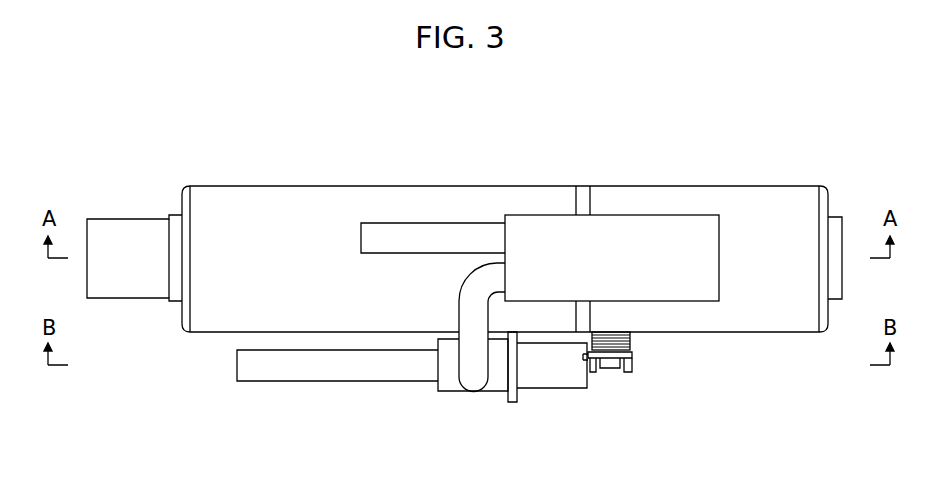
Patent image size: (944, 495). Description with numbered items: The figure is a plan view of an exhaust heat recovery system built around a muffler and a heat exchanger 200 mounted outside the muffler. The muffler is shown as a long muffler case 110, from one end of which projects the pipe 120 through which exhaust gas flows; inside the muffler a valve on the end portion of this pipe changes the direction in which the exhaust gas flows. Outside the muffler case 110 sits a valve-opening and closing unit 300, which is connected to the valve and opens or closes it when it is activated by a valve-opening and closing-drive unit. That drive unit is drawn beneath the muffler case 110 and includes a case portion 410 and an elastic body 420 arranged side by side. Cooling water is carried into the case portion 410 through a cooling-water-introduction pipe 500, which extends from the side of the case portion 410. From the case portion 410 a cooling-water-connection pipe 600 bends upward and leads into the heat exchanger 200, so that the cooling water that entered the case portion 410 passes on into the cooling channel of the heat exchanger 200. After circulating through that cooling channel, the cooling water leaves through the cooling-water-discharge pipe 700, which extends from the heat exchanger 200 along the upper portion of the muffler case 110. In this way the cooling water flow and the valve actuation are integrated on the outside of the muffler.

The muffler case 110 is at (280, 207).
The pipe 120 is at (119, 233).
The heat exchanger 200 is at (657, 232).
The valve-opening and closing unit 300 is at (631, 346).
The case portion 410 is at (428, 370).
The elastic body 420 is at (556, 378).
The cooling-water-introduction pipe 500 is at (335, 370).
The cooling-water-connection pipe 600 is at (490, 277).
The cooling-water-discharge pipe 700 is at (393, 233).